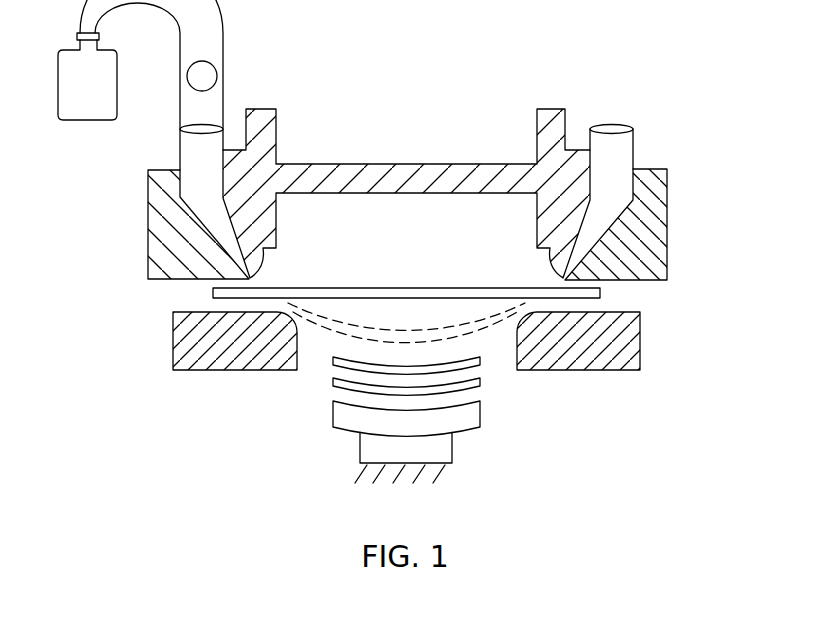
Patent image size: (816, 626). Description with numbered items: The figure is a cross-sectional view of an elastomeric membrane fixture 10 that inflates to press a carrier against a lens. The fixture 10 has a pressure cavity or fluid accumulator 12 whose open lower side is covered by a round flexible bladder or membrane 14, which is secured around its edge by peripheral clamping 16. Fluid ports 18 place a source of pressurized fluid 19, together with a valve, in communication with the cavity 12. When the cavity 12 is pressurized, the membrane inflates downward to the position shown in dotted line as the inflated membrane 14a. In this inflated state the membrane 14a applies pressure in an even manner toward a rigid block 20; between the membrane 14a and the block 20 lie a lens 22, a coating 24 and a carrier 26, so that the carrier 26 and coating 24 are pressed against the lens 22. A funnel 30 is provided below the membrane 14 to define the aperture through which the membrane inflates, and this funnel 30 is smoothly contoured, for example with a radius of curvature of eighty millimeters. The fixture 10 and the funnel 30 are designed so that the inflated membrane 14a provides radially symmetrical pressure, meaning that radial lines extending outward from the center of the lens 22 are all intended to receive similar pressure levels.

The elastomeric membrane fixture 10 is at (582, 73).
The pressure cavity 12 is at (377, 213).
The flexible membrane 14 is at (482, 287).
The inflated membrane 14a is at (488, 327).
The peripheral clamping 16 is at (620, 293).
The fluid port 18 is at (190, 145).
The source of pressurized fluid 19 is at (77, 88).
The rigid block 20 is at (367, 452).
The lens 22 is at (333, 413).
The coating 24 is at (333, 381).
The carrier 26 is at (333, 360).
The funnel 30 is at (527, 318).